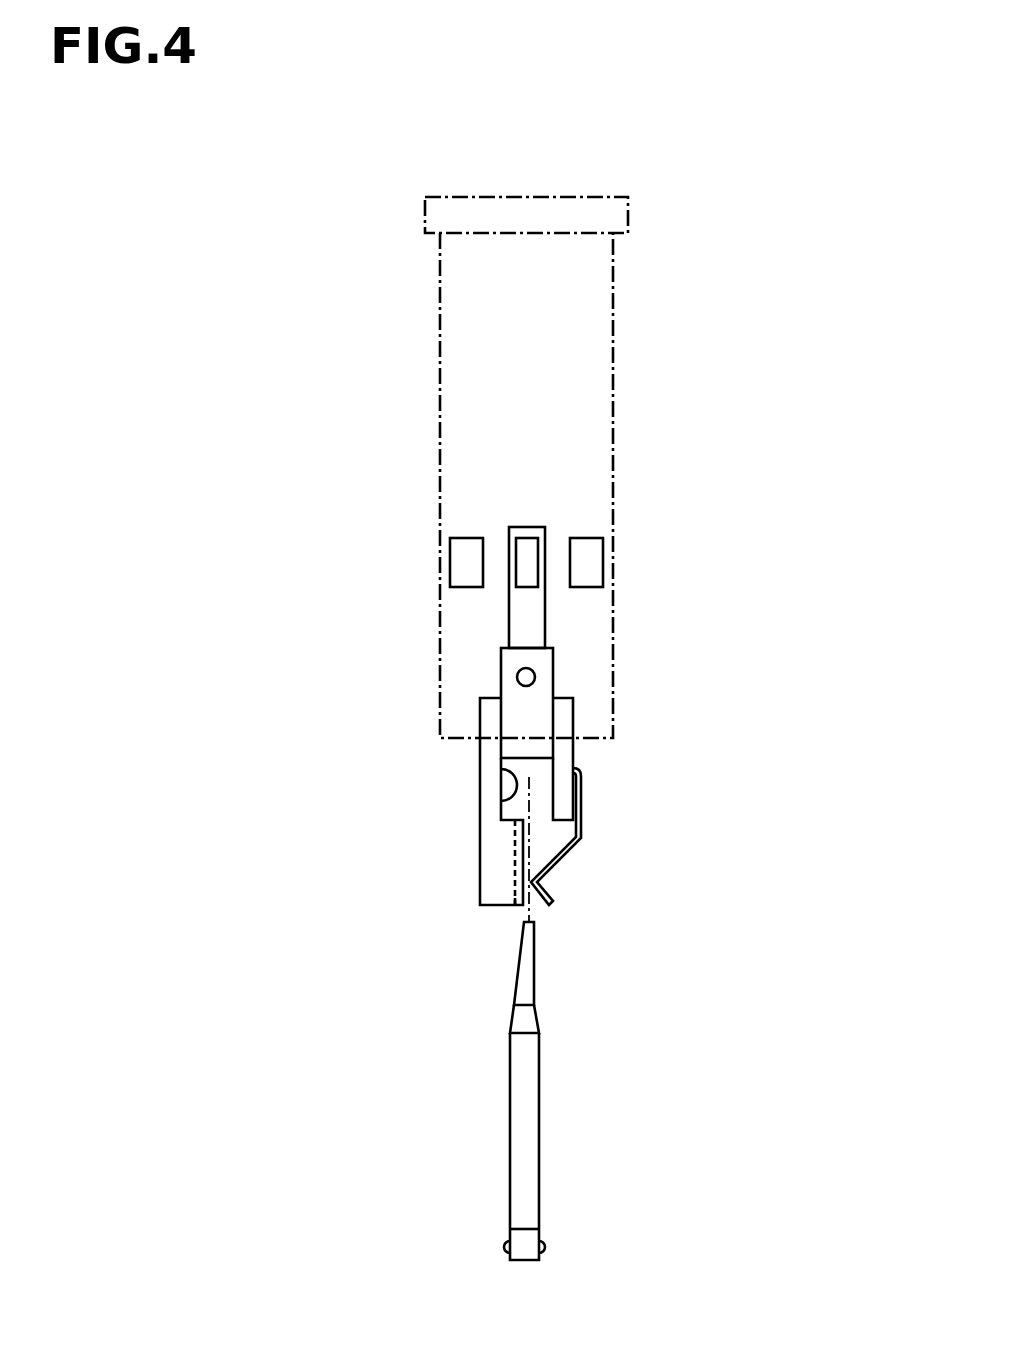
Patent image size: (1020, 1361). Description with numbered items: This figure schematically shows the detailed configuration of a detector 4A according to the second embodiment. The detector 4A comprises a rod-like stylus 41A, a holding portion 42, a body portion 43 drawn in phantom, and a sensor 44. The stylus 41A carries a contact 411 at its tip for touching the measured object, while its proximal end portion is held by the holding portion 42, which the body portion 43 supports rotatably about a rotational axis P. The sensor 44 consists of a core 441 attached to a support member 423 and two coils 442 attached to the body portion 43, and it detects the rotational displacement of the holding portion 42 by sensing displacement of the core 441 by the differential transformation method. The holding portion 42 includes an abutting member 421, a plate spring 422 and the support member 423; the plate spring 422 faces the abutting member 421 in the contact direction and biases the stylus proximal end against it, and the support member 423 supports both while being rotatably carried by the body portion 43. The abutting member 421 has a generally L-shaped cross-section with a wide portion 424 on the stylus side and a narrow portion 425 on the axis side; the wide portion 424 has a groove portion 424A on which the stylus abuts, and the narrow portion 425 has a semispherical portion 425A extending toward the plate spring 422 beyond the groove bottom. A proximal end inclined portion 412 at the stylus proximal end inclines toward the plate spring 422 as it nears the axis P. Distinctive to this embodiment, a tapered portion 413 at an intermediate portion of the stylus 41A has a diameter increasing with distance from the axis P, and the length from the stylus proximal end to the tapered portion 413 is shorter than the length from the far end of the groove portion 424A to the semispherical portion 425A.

The detector 4A is at (763, 468).
The body portion 43 is at (613, 312).
The sensor 44 is at (578, 475).
The core 441 is at (525, 548).
The coils 442 is at (462, 565).
The holding portion 42 is at (647, 778).
The support member 423 is at (503, 663).
The rotational axis P is at (532, 672).
The narrow portion 425 is at (487, 747).
The semispherical portion 425A is at (507, 785).
The wide portion 424 is at (492, 862).
The groove portion 424A is at (515, 910).
The plate spring 422 is at (580, 823).
The abutting member 421 is at (443, 845).
The stylus 41A is at (523, 1085).
The proximal end inclined portion 412 is at (513, 938).
The tapered portion 413 is at (537, 1015).
The contact 411 is at (504, 1247).